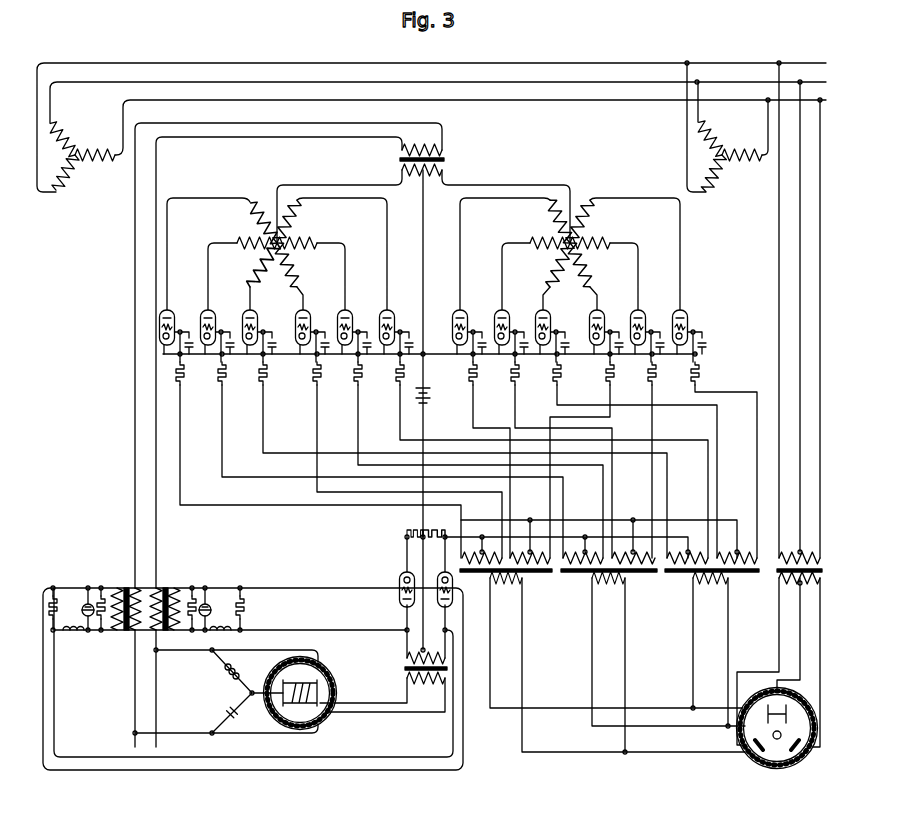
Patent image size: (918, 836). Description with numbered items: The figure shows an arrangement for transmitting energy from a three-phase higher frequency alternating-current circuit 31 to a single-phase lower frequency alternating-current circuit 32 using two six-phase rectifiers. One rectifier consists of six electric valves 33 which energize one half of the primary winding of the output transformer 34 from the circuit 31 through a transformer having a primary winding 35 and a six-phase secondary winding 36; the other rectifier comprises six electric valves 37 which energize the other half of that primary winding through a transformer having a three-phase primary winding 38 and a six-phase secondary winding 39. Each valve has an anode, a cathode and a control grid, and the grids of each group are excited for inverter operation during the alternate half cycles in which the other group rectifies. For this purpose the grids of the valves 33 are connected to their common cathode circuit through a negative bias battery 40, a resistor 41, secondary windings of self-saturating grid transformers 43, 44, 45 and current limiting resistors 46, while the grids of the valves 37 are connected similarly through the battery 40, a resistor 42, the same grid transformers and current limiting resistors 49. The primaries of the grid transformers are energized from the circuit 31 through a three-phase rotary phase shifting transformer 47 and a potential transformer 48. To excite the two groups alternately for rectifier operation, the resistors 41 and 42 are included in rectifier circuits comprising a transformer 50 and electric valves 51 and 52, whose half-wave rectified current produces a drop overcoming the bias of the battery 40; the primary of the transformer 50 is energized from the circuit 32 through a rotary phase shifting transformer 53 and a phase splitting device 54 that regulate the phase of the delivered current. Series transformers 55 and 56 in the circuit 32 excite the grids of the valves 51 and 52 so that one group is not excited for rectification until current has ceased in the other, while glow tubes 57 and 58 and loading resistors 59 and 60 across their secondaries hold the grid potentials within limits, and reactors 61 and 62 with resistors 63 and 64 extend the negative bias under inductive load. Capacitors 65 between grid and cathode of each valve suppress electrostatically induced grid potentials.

The three-phase higher frequency alternating-current circuit 31 is at (568, 100).
The single-phase lower frequency alternating-current circuit 32 is at (156, 712).
The electric valves 33 is at (384, 309).
The output transformer 34 is at (400, 160).
The primary winding 35 is at (78, 162).
The six-phase secondary winding 36 is at (265, 240).
The electric valves 37 is at (677, 309).
The three-phase primary winding 38 is at (728, 162).
The six-phase secondary winding 39 is at (580, 240).
The negative bias battery 40 is at (428, 405).
The resistor 41 is at (435, 530).
The resistor 42 is at (411, 530).
The grid transformer 43 is at (524, 580).
The grid transformer 44 is at (623, 580).
The grid transformer 45 is at (731, 580).
The current limiting resistors 46 is at (398, 388).
The three-phase rotary phase shifting transformer 47 is at (782, 766).
The potential transformer 48 is at (783, 582).
The current limiting resistors 49 is at (693, 388).
The transformer 50 is at (405, 670).
The electric valve 51 is at (399, 576).
The electric valve 52 is at (453, 584).
The rotary phase shifting transformer 53 is at (328, 668).
The phase splitting device 54 is at (230, 679).
The series transformer 55 is at (166, 588).
The series transformer 56 is at (126, 588).
The glow tube 57 is at (211, 607).
The glow tube 58 is at (82, 607).
The loading resistor 59 is at (192, 624).
The loading resistor 60 is at (103, 624).
The reactor 61 is at (228, 633).
The reactor 62 is at (70, 634).
The resistor 63 is at (245, 611).
The resistor 64 is at (56, 592).
The capacitors 65 is at (438, 338).